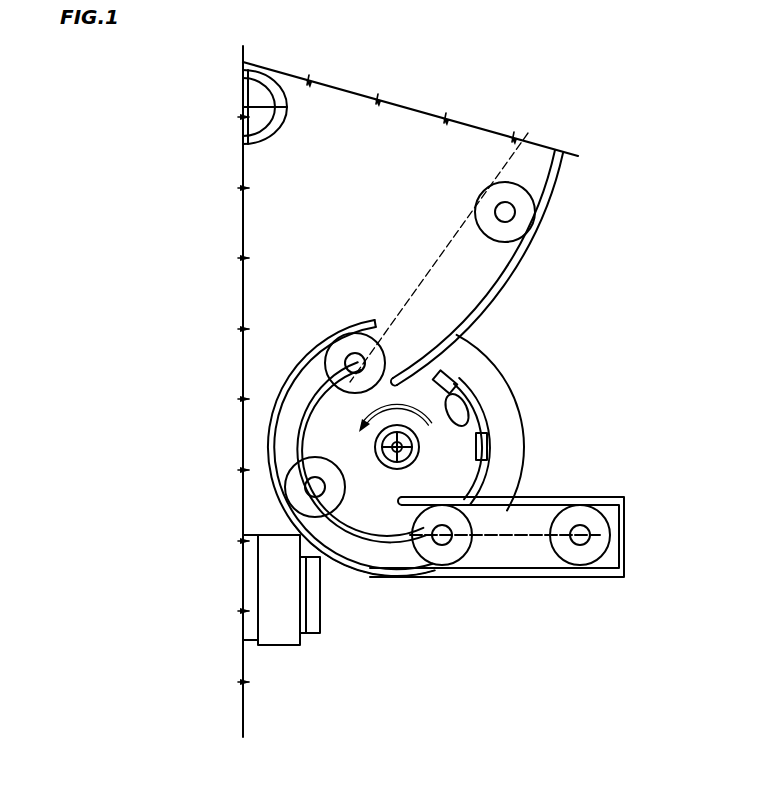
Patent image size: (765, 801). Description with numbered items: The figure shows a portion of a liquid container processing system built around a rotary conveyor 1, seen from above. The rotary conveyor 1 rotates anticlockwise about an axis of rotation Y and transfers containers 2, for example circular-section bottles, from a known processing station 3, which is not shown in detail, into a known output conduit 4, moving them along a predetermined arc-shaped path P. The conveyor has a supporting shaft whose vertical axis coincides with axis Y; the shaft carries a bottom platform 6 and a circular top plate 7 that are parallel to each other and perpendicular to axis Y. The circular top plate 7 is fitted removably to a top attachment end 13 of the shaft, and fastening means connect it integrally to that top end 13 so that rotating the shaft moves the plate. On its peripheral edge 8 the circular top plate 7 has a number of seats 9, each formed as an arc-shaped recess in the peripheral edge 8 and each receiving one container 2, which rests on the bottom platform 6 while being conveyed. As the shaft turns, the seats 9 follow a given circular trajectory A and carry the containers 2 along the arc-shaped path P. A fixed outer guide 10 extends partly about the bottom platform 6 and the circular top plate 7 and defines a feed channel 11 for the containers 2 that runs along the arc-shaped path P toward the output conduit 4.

The rotary conveyor 1 is at (509, 331).
The containers 2 is at (505, 181).
The processing station 3 is at (353, 84).
The output conduit 4 is at (607, 503).
The bottom platform 6 is at (502, 407).
The circular top plate 7 is at (458, 458).
The peripheral edge 8 is at (488, 440).
The seats 9 is at (452, 393).
The fixed outer guide 10 is at (340, 330).
The feed channel 11 is at (350, 538).
The top attachment end 13 is at (401, 445).
The circular trajectory A is at (333, 393).
The arc-shaped path P is at (295, 470).
The axis of rotation Y is at (399, 450).